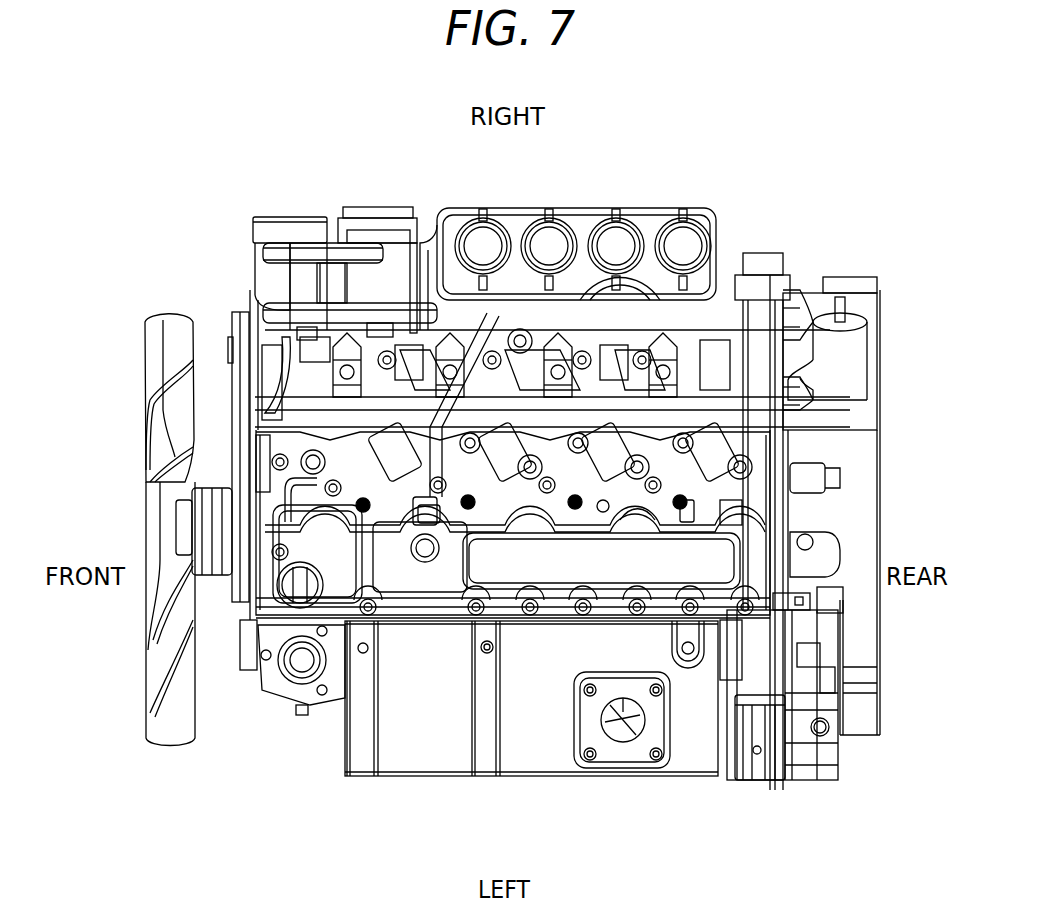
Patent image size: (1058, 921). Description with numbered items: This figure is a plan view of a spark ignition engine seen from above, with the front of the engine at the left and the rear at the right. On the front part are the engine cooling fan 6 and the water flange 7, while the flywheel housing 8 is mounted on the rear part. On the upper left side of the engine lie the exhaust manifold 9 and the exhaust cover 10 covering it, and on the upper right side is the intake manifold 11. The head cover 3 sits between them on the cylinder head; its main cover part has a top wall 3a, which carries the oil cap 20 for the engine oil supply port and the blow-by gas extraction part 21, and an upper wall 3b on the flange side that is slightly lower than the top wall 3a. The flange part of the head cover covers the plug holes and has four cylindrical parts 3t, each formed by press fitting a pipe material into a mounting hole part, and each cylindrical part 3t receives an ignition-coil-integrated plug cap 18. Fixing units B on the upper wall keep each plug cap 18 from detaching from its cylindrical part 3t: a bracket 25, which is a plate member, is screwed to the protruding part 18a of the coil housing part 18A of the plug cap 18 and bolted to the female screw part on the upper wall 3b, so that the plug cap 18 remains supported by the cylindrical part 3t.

The head cover 3 is at (290, 502).
The top wall 3a is at (543, 621).
The upper wall 3b is at (403, 621).
The cylindrical part 3t is at (637, 510).
The engine cooling fan 6 is at (153, 657).
The water flange 7 is at (303, 690).
The flywheel housing 8 is at (863, 643).
The exhaust manifold 9 is at (640, 758).
The exhaust cover 10 is at (432, 757).
The intake manifold 11 is at (655, 215).
The ignition-coil-integrated plug cap 18 is at (602, 445).
The coil housing part 18A is at (772, 440).
The protruding part 18a is at (725, 512).
The oil cap 20 is at (252, 602).
The blow-by gas extraction part 21 is at (440, 530).
The bracket 25 is at (688, 505).
The fixing unit B is at (603, 508).